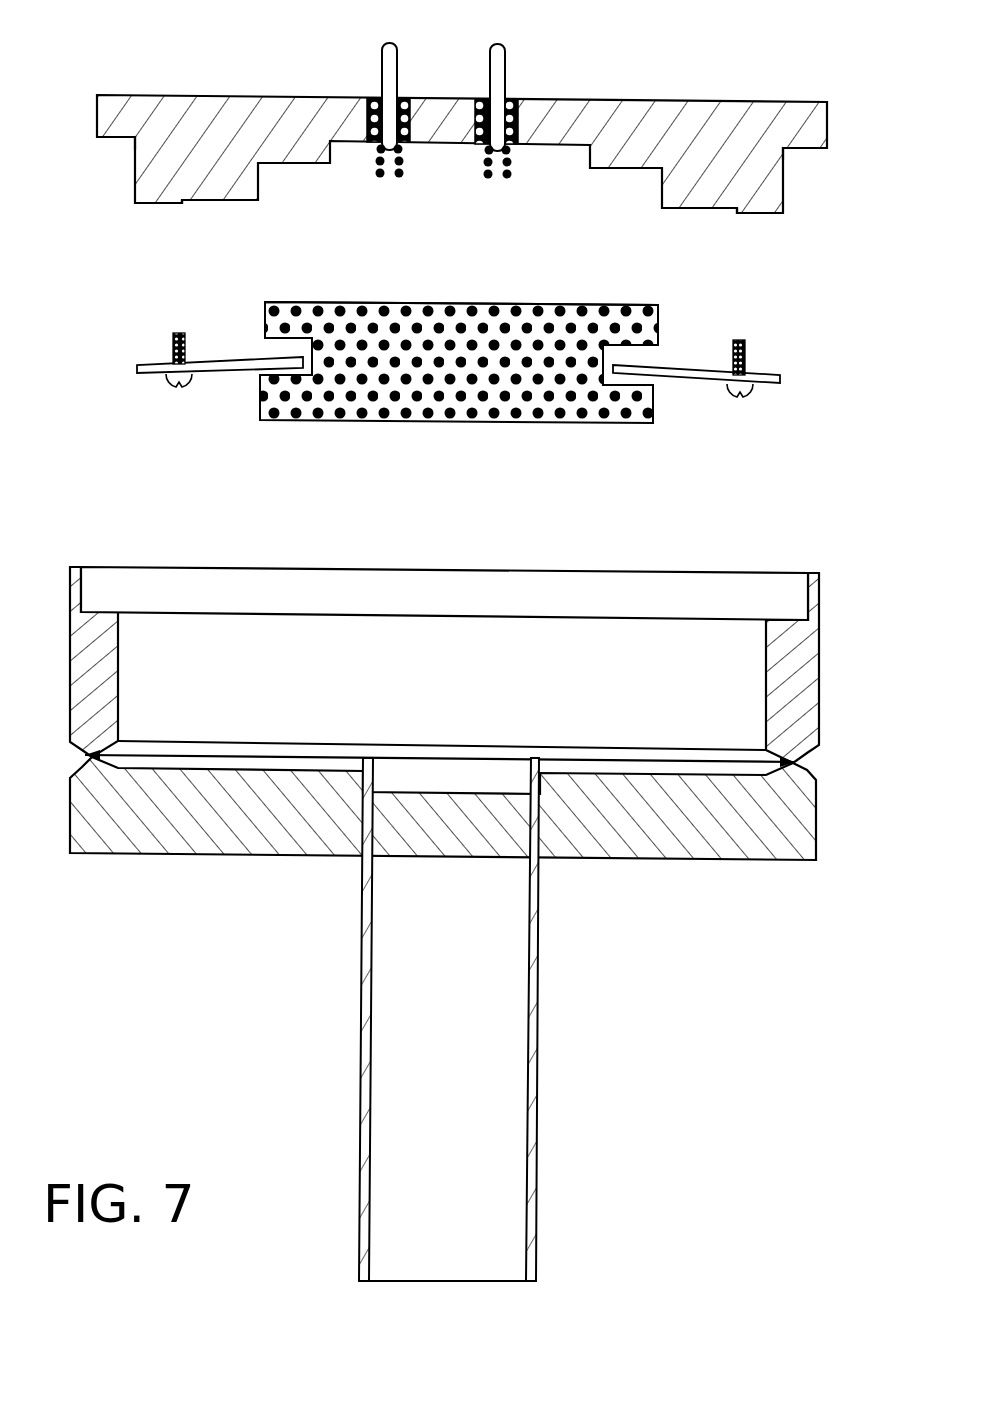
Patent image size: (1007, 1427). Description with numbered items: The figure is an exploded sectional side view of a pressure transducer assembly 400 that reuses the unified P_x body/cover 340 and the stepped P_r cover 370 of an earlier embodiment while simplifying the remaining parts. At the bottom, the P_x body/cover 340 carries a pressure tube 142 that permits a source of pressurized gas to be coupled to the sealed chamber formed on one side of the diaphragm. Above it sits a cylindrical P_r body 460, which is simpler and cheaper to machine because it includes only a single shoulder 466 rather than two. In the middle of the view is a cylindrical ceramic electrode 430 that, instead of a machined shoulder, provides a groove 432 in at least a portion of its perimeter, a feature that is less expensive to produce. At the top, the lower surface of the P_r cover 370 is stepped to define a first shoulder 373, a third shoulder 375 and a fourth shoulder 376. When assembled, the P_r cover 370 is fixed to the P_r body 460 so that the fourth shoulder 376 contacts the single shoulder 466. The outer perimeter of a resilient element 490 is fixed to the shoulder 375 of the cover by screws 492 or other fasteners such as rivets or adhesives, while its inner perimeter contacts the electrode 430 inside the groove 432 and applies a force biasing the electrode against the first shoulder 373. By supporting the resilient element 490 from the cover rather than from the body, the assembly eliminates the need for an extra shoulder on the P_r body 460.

The P_r cover 370 is at (638, 90).
The first shoulder 373 is at (282, 165).
The third shoulder 375 is at (160, 206).
The fourth shoulder 376 is at (127, 140).
The cylindrical electrode 430 is at (378, 425).
The groove 432 is at (278, 353).
The resilient element 490 is at (668, 380).
The screws 492 is at (178, 340).
The single shoulder 466 is at (100, 608).
The cylindrical P_r body 460 is at (828, 676).
The P_x body/cover 340 is at (828, 828).
The pressure tube 142 is at (541, 1070).
The pressure transducer assembly 400 is at (192, 899).